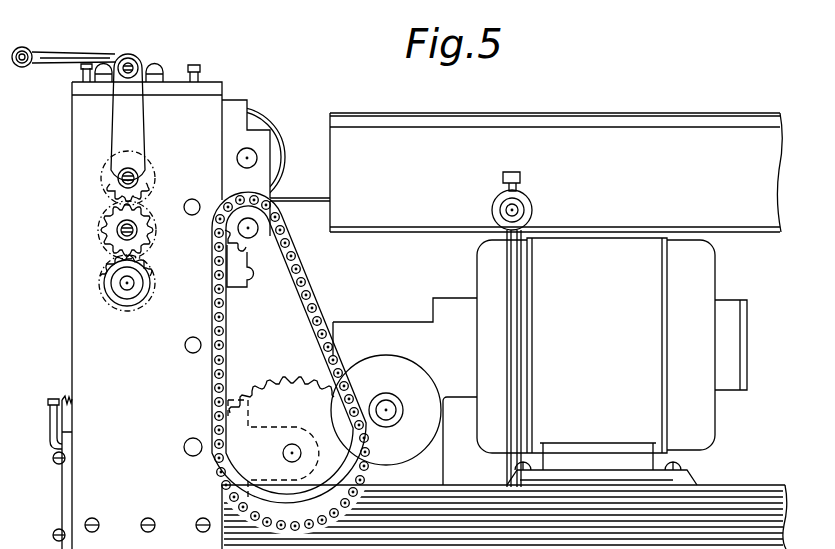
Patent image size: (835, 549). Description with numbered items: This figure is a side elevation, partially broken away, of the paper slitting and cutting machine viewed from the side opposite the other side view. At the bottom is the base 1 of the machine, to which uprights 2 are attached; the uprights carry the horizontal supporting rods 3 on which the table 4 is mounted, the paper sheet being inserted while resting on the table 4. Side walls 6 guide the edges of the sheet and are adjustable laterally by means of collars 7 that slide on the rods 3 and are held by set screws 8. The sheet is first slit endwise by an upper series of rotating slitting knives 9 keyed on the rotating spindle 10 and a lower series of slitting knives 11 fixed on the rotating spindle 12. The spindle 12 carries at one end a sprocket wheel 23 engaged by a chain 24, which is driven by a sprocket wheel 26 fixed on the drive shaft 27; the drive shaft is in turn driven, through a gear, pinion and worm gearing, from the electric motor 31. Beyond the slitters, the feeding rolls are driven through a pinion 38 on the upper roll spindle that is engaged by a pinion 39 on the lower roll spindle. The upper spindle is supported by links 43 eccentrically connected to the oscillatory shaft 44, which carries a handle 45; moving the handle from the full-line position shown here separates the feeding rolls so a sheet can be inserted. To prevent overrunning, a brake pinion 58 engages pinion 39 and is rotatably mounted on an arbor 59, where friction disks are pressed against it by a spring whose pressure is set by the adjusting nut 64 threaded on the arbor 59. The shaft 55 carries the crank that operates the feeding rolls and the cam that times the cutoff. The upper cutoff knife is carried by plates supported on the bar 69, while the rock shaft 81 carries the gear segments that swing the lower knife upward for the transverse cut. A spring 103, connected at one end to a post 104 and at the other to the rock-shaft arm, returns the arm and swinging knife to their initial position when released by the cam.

The base 1 is at (724, 494).
The uprights 2 is at (518, 280).
The horizontal supporting rods 3 is at (518, 210).
The table 4 is at (330, 196).
The side walls 6 is at (556, 172).
The collars 7 is at (530, 202).
The set screws 8 is at (520, 176).
The rotating slitting knives 9 is at (280, 150).
The rotating spindle 10 is at (245, 158).
The rotating slitting knives 11 is at (270, 262).
The rotating spindle 12 is at (249, 220).
The sprocket wheel 23 is at (276, 198).
The chain 24 is at (318, 303).
The sprocket wheel 26 is at (302, 385).
The drive shaft 27 is at (297, 452).
The electric motor 31 is at (717, 268).
The pinion 38 is at (144, 185).
The pinion 39 is at (146, 220).
The links 43 is at (137, 128).
The oscillatory shaft 44 is at (133, 50).
The handle 45 is at (60, 52).
The shaft 55 is at (190, 456).
The pinion 58 is at (150, 271).
The arbor 59 is at (127, 290).
The adjusting nut 64 is at (141, 283).
The bar 69 is at (190, 215).
The rock shaft 81 is at (189, 352).
The spring 103 is at (64, 400).
The post 104 is at (53, 429).